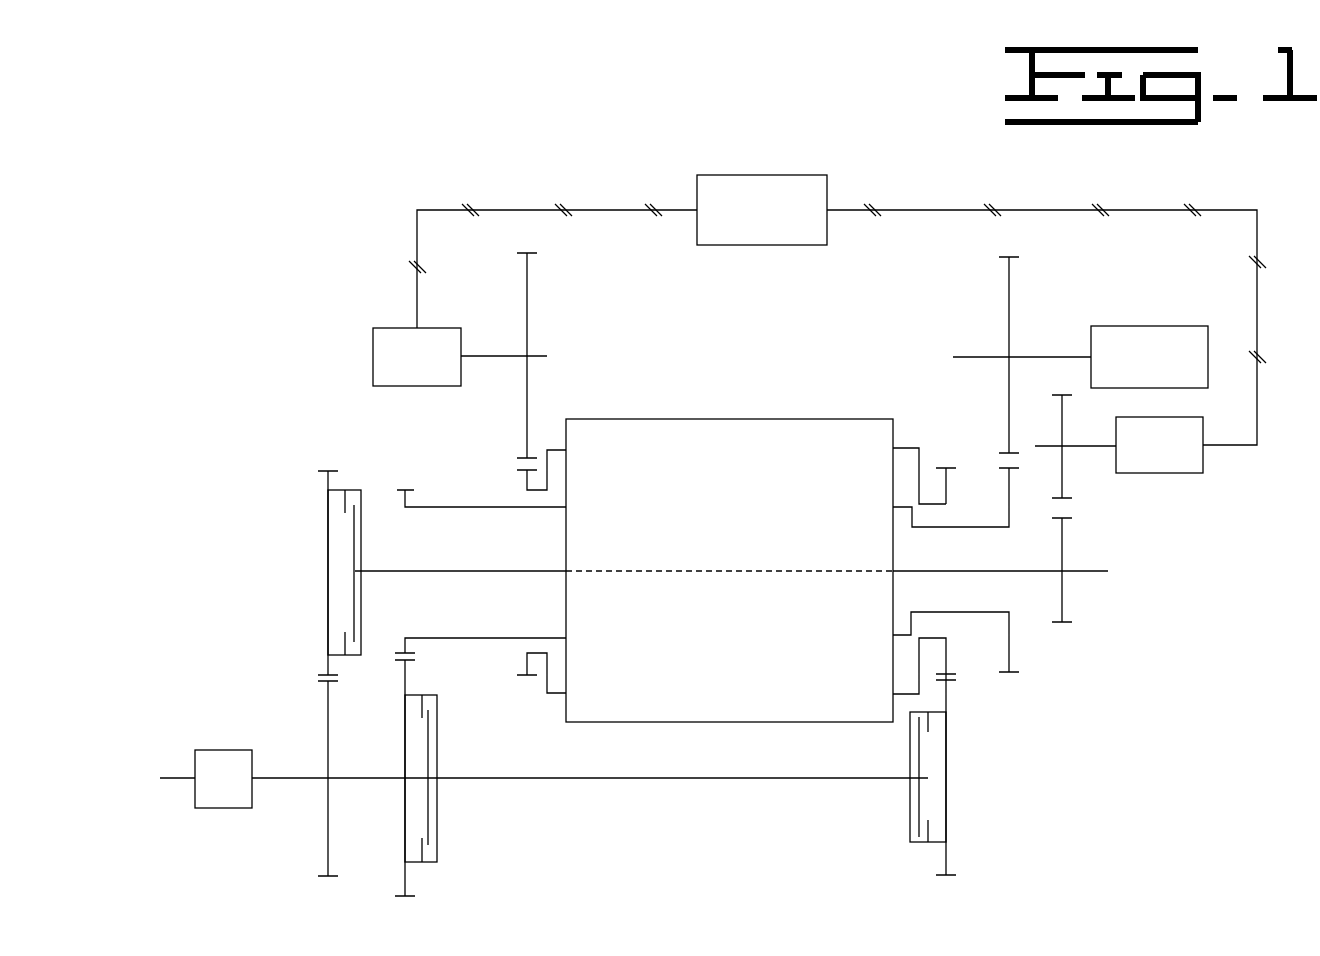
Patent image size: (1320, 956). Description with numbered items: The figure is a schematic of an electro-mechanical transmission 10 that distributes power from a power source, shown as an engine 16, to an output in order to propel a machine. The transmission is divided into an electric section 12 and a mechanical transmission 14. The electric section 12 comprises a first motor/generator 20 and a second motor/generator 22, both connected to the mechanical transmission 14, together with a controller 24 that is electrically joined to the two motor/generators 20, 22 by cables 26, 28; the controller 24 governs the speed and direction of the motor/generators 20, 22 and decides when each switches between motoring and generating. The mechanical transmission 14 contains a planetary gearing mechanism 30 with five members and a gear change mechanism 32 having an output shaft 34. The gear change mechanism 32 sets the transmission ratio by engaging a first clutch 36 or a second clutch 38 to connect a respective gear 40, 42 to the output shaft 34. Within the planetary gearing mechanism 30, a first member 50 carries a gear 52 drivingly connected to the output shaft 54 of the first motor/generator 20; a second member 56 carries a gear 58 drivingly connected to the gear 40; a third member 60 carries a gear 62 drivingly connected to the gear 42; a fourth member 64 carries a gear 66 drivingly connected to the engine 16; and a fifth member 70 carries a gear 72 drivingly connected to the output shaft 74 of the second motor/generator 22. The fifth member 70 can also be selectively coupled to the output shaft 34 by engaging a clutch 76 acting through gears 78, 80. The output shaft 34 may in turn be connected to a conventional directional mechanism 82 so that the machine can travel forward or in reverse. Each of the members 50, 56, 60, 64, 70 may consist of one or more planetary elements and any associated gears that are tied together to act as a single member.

The electro-mechanical transmission 10 is at (265, 566).
The electric section 12 is at (658, 141).
The mechanical transmission 14 is at (681, 852).
The engine 16 is at (1150, 326).
The first motor/generator 20 is at (373, 357).
The second motor/generator 22 is at (1203, 465).
The controller 24 is at (742, 175).
The cable 26 is at (437, 210).
The cable 28 is at (915, 210).
The planetary gearing mechanism 30 is at (742, 405).
The gear change mechanism 32 is at (996, 767).
The output shaft 34 is at (295, 778).
The first clutch 36 is at (437, 852).
The second clutch 38 is at (910, 832).
The gear 40 is at (407, 673).
The gear 42 is at (948, 693).
The first member 50 is at (560, 447).
The gear 52 is at (523, 472).
The output shaft 54 is at (487, 356).
The second member 56 is at (475, 508).
The gear 58 is at (403, 638).
The third member 60 is at (906, 448).
The gear 62 is at (946, 485).
The fourth member 64 is at (940, 527).
The gear 66 is at (1010, 502).
The fifth member 70 is at (975, 571).
The gear 72 is at (1062, 553).
The output shaft 74 is at (1085, 447).
The clutch 76 is at (361, 490).
The gear 78 is at (328, 535).
The gear 80 is at (328, 835).
The directional mechanism 82 is at (218, 750).